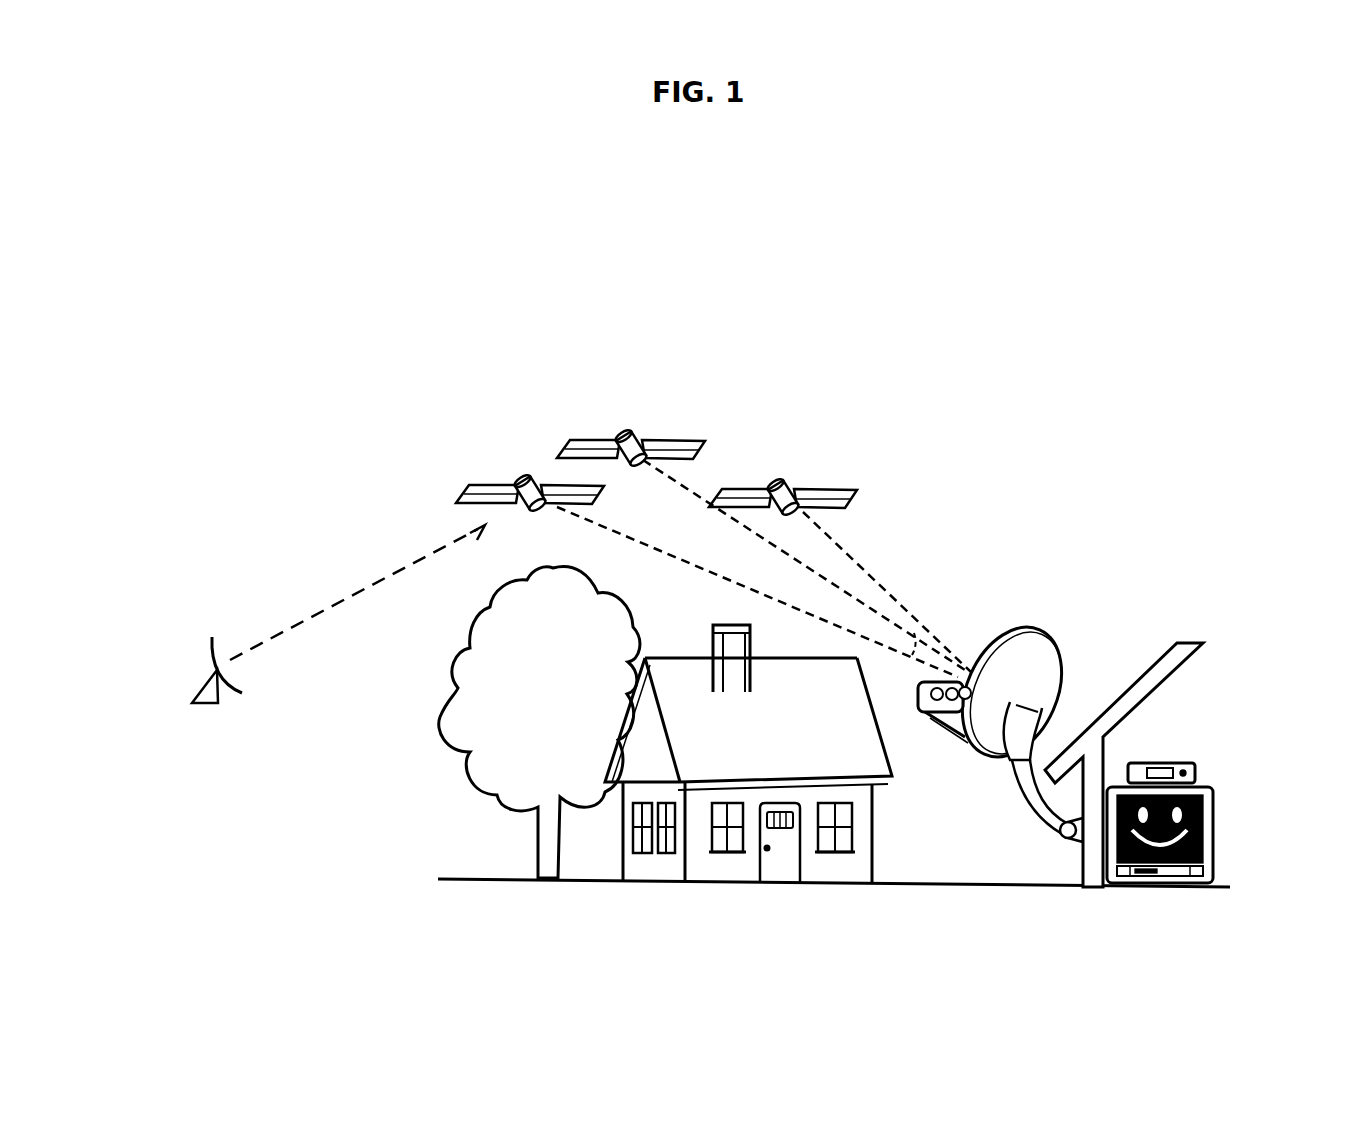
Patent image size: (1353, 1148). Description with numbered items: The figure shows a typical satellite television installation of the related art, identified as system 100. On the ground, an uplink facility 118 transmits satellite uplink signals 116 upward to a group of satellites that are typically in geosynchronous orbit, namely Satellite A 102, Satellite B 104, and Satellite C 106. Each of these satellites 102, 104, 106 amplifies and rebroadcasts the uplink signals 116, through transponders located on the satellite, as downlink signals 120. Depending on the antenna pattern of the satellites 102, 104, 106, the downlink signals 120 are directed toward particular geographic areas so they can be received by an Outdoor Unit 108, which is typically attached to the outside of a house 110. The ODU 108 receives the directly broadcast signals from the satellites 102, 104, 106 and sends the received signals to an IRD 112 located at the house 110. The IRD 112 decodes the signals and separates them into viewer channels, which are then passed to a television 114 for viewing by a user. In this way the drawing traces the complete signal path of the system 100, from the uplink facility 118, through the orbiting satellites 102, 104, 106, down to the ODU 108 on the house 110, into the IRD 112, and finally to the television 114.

The system 100 is at (835, 237).
The Satellite A 102 is at (497, 468).
The Satellite B 104 is at (790, 462).
The Satellite C 106 is at (695, 426).
The Outdoor Unit (ODU) 108 is at (1027, 628).
The house 110 is at (1147, 660).
The IRD 112 is at (1162, 760).
The television 114 is at (1215, 822).
The satellite uplink signals 116 is at (303, 607).
The uplink facility 118 is at (200, 675).
The downlink signals 120 is at (887, 580).